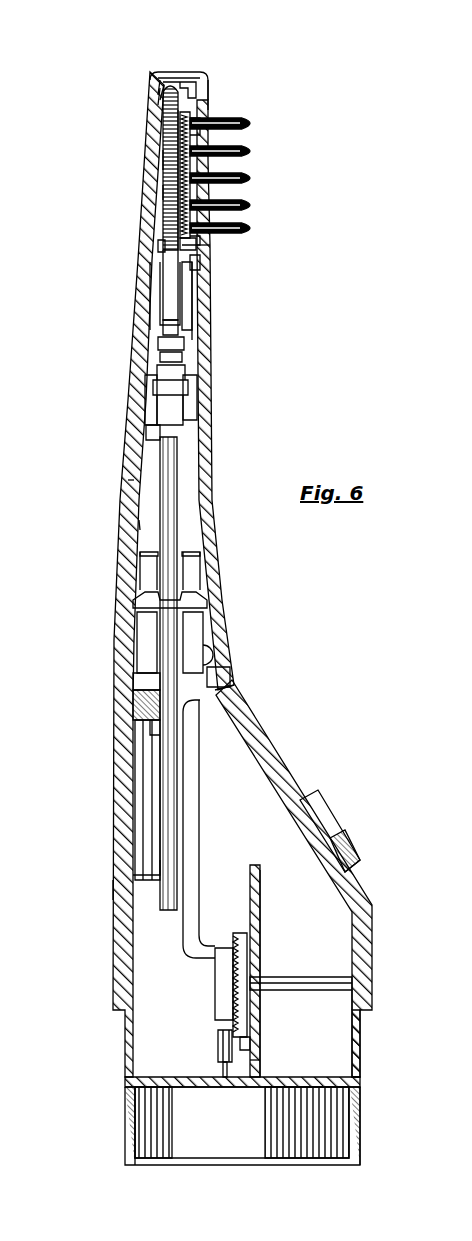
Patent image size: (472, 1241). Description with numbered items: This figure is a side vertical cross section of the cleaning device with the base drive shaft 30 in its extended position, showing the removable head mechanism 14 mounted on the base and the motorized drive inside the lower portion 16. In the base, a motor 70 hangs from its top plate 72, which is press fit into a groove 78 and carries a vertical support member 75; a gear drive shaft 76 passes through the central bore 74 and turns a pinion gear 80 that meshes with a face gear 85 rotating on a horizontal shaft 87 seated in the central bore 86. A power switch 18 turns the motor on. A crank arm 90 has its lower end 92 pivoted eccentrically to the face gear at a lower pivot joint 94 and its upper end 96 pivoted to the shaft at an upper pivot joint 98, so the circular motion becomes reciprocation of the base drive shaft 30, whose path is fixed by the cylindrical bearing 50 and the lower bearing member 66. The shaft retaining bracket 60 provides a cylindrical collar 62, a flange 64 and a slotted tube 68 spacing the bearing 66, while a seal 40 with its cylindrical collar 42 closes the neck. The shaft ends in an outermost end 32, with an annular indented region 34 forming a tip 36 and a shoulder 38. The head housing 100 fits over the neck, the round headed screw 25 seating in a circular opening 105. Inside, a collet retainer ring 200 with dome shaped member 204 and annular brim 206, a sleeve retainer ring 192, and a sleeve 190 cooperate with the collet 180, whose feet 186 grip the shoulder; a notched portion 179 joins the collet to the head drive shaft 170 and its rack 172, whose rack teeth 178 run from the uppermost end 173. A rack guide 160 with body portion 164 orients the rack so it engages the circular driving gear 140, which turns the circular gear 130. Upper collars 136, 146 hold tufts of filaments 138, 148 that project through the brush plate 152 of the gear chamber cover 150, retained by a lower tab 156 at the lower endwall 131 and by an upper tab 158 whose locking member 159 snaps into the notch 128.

The head mechanism 14 is at (125, 340).
The lower portion of the base 16 is at (112, 890).
The power switch 18 is at (325, 820).
The round headed screw 25 is at (225, 670).
The base drive shaft 30 is at (185, 552).
The outermost end of the base drive shaft 32 is at (180, 362).
The annular indented region 34 is at (175, 440).
The tip 36 is at (165, 400).
The shoulder 38 is at (178, 430).
The seal 40 is at (205, 622).
The cylindrical collar 42 is at (195, 600).
The cylindrical bearing 50 is at (210, 652).
The shaft retaining bracket 60 is at (148, 808).
The cylindrical collar of the bracket 62 is at (148, 680).
The flange 64 is at (150, 700).
The lower bearing member 66 is at (150, 850).
The slotted tube 68 is at (150, 775).
The motor 70 is at (215, 1140).
The top plate 72 is at (130, 1080).
The central bore 74 is at (225, 1060).
The vertical support member 75 is at (262, 895).
The gear drive shaft 76 is at (255, 1060).
The groove 78 is at (362, 1055).
The pinion gear 80 is at (247, 1045).
The face gear 85 is at (240, 1000).
The central bore of the vertical support member 86 is at (275, 975).
The horizontal shaft 87 is at (325, 985).
The crank arm 90 is at (195, 760).
The lower end of the crank arm 92 is at (247, 945).
The lower pivot joint 94 is at (225, 980).
The upper end of the crank arm 96 is at (215, 725).
The upper pivot joint 98 is at (160, 735).
The head housing 100 is at (125, 490).
The circular opening 105 is at (225, 672).
The notch 128 is at (172, 72).
The circular gear 130 is at (165, 128).
The lower endwall of the gear chamber 131 is at (200, 255).
The upper collar 136 is at (186, 120).
The tuft of filaments 138 is at (222, 124).
The circular driving gear 140 is at (178, 208).
The upper collar of the driving gear 146 is at (190, 240).
The tuft of filaments of the driving gear 148 is at (195, 222).
The gear chamber cover 150 is at (208, 90).
The brush plate 152 is at (225, 145).
The lower tab 156 is at (172, 232).
The upper tab 158 is at (190, 78).
The locking member 159 is at (165, 78).
The rack guide 160 is at (160, 280).
The body portion of the rack guide 164 is at (150, 290).
The head drive shaft 170 is at (193, 290).
The rack 172 is at (160, 160).
The uppermost end of the rack 173 is at (160, 95).
The rack teeth 178 is at (155, 192).
The notched portion 179 is at (170, 330).
The collet 180 is at (196, 320).
The feet 186 is at (150, 455).
The sleeve 190 is at (183, 390).
The sleeve retainer ring 192 is at (125, 525).
The collet retainer ring 200 is at (135, 625).
The dome shaped member 204 is at (200, 570).
The annular brim 206 is at (150, 588).